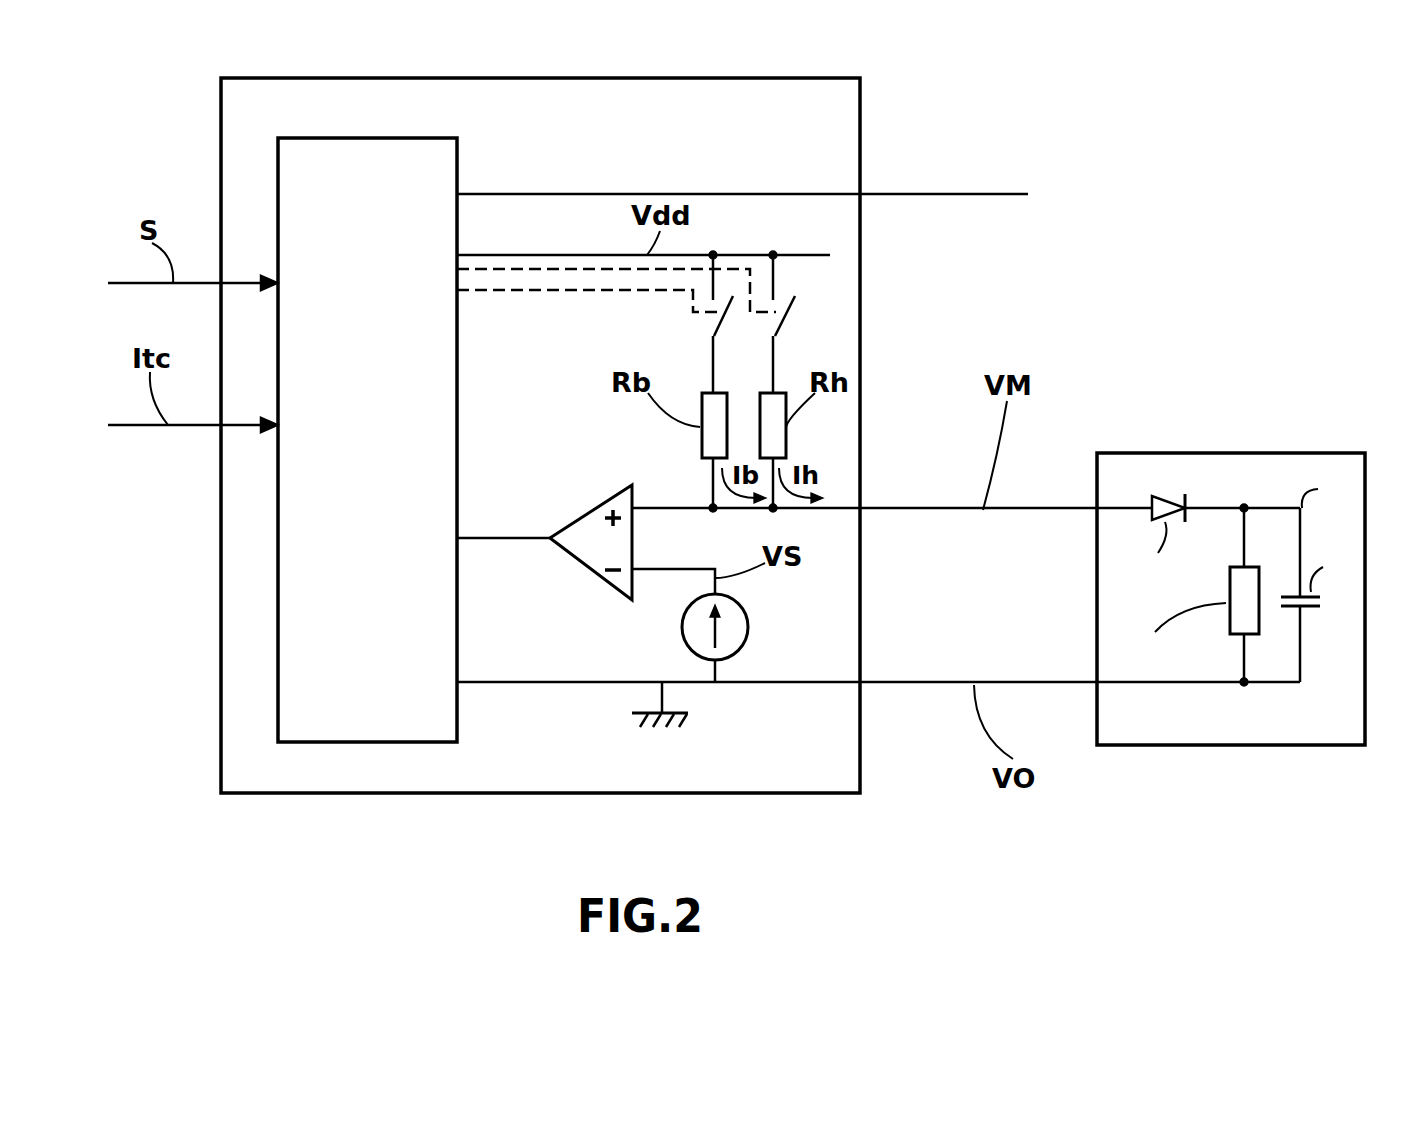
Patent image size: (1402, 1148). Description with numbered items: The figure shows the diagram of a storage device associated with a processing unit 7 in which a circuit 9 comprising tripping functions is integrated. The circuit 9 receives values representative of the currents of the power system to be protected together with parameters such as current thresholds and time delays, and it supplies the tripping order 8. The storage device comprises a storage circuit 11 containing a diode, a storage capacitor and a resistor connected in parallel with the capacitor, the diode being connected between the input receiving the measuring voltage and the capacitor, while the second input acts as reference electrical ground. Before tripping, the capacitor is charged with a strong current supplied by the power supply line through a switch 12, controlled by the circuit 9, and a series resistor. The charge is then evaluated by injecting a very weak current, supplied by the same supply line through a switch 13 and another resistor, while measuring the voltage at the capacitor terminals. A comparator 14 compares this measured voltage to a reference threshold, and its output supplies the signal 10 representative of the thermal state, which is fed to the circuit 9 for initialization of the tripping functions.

The processing unit 7 is at (862, 360).
The tripping order 8 is at (950, 194).
The circuit comprising tripping functions 9 is at (457, 158).
The signal 10 is at (520, 538).
The storage circuit 11 is at (1225, 453).
The switch 12 is at (784, 324).
The switch 13 is at (722, 322).
The comparator 14 is at (585, 511).